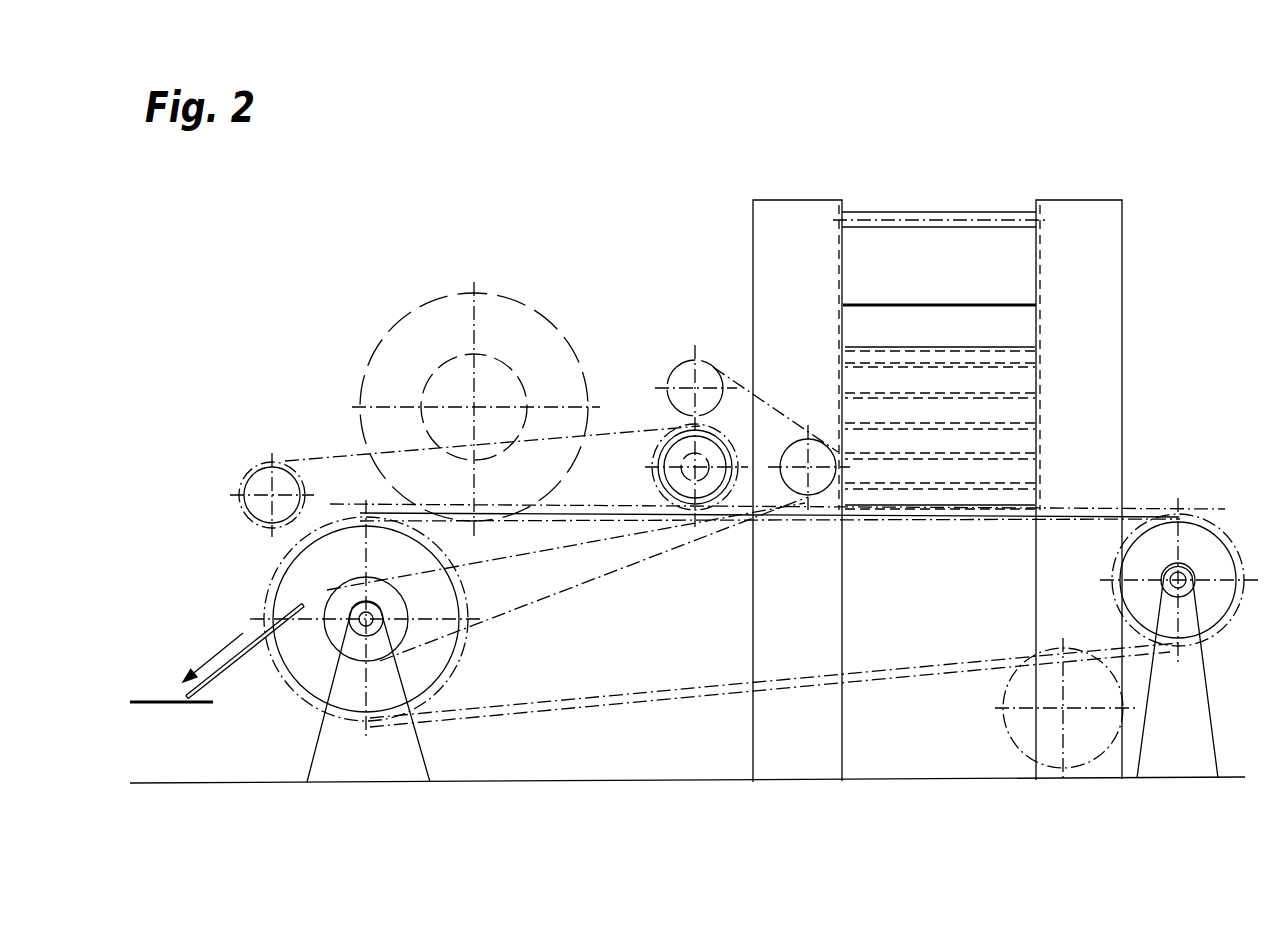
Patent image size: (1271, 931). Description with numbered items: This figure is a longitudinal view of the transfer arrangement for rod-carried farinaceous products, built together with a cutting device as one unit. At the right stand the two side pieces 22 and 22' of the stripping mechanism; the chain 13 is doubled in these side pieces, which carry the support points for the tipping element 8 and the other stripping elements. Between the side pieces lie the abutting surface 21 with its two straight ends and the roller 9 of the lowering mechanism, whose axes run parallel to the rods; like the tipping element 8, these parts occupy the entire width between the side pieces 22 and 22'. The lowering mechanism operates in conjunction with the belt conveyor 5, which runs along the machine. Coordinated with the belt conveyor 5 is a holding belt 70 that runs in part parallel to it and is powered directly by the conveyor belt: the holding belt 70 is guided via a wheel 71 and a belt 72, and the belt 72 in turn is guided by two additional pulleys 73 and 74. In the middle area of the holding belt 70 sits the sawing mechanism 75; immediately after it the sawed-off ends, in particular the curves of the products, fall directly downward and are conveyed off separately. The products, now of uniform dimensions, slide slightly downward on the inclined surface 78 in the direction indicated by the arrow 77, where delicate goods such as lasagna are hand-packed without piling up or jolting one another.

The belt conveyor 5 is at (900, 520).
The tipping element 8 is at (1018, 358).
The roller 9 is at (1030, 495).
The chain 13 is at (838, 270).
The abutting surface 21 is at (1015, 330).
The side piece 22 is at (797, 456).
The side piece 22' is at (1079, 455).
The holding belt 70 is at (298, 452).
The wheel 71 is at (330, 592).
The belt 72 is at (652, 557).
The pulley 73 is at (820, 482).
The pulley 74 is at (690, 360).
The sawing mechanism 75 is at (503, 307).
The arrow 77 is at (223, 652).
The inclined surface 78 is at (173, 700).